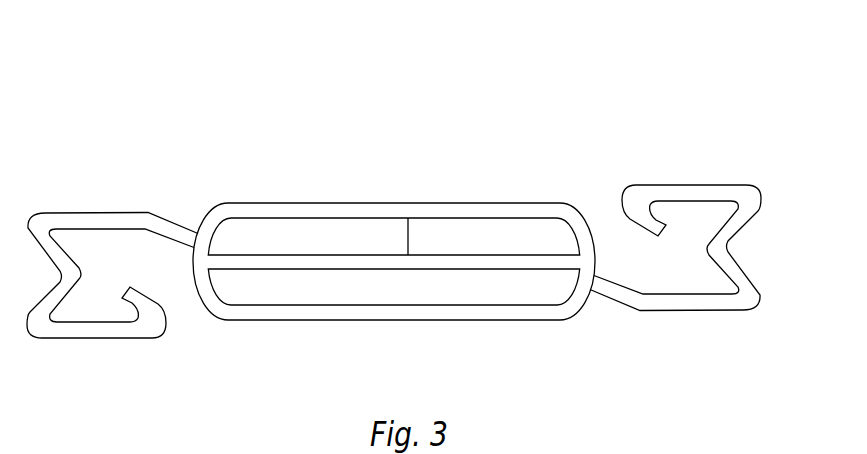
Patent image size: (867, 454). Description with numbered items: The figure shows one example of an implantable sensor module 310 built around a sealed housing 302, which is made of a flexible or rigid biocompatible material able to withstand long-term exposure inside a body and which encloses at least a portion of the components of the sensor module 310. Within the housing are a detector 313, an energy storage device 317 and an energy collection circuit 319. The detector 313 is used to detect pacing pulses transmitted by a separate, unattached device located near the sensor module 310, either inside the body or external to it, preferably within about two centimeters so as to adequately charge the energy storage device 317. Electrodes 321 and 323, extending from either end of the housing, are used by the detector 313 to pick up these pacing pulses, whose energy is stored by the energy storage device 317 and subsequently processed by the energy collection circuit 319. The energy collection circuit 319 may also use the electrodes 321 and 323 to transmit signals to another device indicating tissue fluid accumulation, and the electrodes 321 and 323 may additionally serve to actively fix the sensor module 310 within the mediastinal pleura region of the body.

The sensor module 310 is at (722, 62).
The sealed housing 302 is at (536, 203).
The detector 313 is at (258, 216).
The energy storage device 317 is at (448, 217).
The energy collection circuit 319 is at (374, 305).
The electrode 321 is at (95, 212).
The electrode 323 is at (698, 312).